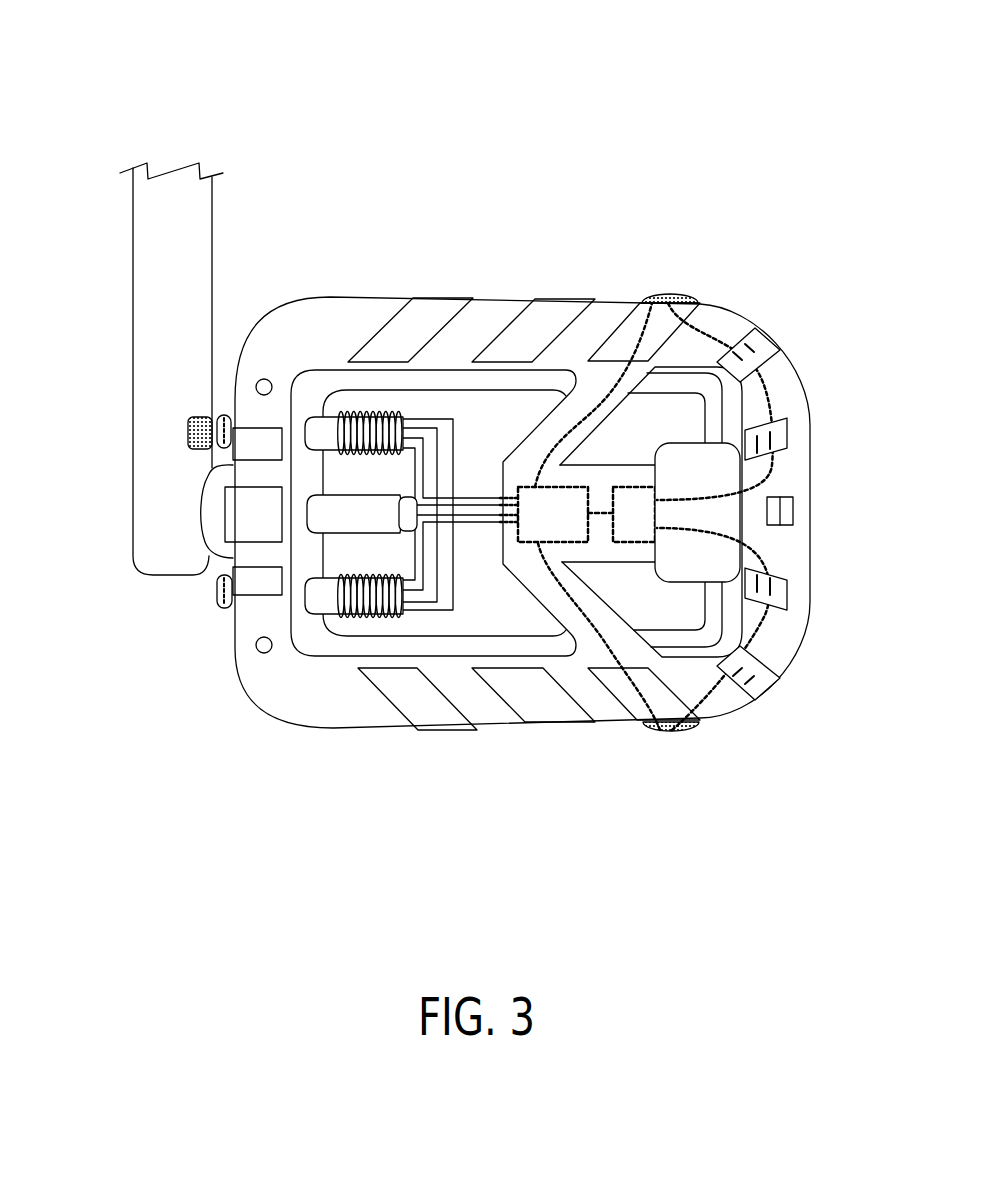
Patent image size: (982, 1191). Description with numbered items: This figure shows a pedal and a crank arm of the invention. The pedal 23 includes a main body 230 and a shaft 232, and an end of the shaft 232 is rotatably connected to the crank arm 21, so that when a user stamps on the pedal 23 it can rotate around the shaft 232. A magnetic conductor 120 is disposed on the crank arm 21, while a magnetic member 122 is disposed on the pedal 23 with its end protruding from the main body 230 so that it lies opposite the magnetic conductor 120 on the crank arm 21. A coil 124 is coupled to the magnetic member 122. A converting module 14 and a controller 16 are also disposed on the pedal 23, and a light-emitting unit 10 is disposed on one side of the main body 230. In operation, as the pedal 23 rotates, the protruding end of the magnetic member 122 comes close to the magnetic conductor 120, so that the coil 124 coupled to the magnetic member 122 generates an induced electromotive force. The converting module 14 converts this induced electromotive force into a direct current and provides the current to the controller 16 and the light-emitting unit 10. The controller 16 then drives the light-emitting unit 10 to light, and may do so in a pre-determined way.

The pedal 23 is at (340, 116).
The crank arm 21 is at (133, 282).
The main body 230 is at (352, 298).
The shaft 232 is at (218, 516).
The magnetic conductor 120 is at (188, 425).
The magnetic member 122 is at (324, 600).
The coil 124 is at (368, 608).
The converting module 14 is at (533, 528).
The controller 16 is at (640, 523).
The light-emitting unit 10 is at (672, 290).